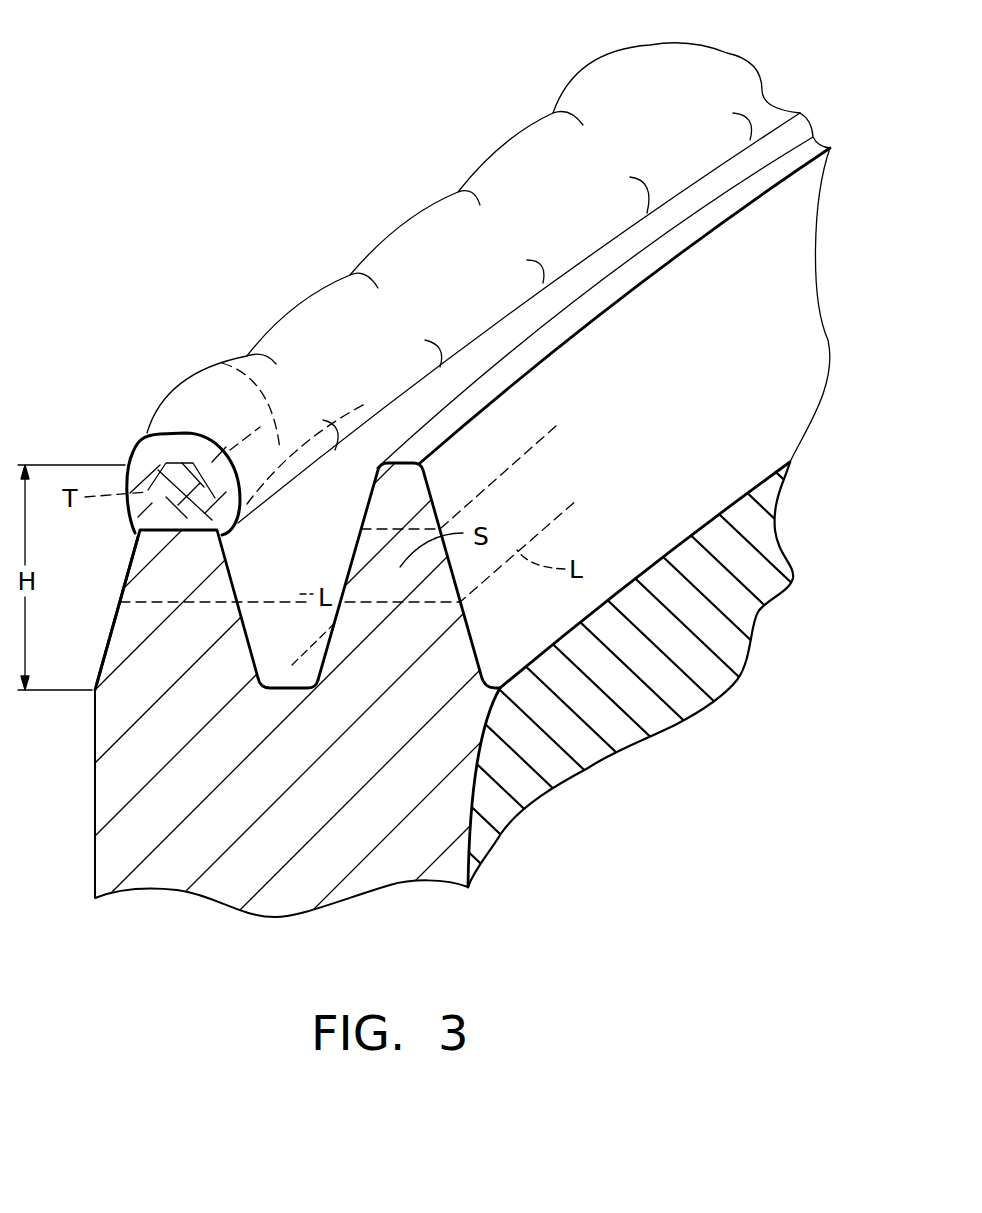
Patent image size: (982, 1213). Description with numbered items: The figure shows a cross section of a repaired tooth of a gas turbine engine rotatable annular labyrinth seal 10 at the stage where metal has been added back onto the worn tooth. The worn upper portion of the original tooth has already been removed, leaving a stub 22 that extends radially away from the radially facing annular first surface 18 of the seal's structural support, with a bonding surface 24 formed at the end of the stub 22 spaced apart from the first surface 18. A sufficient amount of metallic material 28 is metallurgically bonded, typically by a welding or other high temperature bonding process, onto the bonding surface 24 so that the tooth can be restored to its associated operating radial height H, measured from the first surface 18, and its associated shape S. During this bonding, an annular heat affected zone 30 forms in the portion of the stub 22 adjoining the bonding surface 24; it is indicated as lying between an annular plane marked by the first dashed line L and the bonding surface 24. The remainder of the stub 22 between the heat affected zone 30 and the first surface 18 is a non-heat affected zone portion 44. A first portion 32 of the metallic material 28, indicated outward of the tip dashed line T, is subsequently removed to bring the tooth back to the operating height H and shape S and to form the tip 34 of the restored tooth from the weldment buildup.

The labyrinth seal 10 is at (440, 922).
The first surface 18 is at (296, 678).
The stub 22 is at (157, 672).
The bonding surface 24 is at (222, 363).
The metallic material 28 is at (553, 177).
The heat affected zone 30 is at (150, 571).
The first portion 32 is at (165, 447).
The tip 34 is at (400, 500).
The non-heat affected zone portion 44 is at (130, 627).